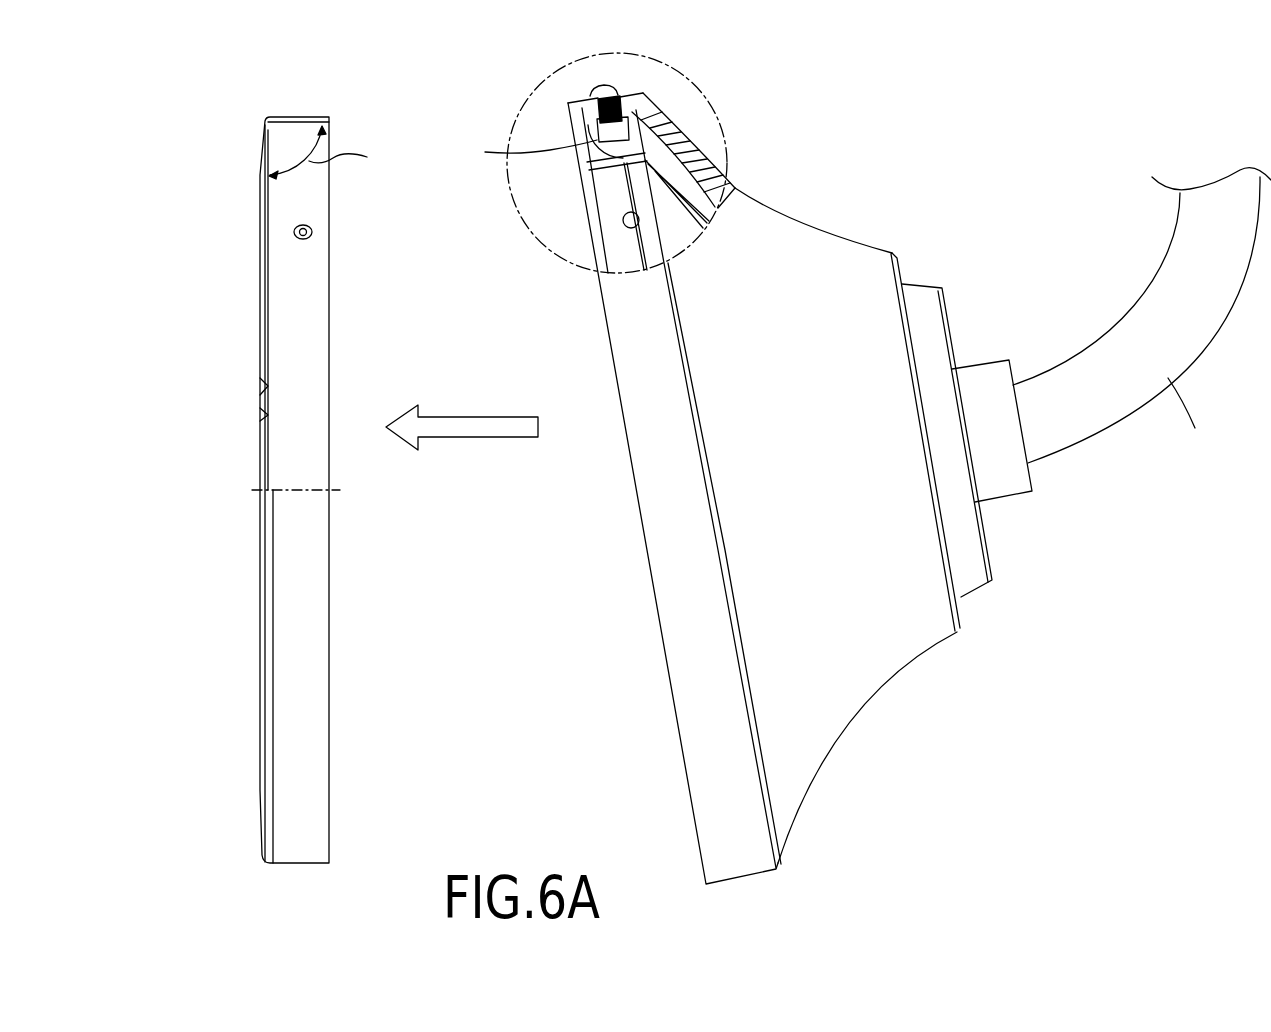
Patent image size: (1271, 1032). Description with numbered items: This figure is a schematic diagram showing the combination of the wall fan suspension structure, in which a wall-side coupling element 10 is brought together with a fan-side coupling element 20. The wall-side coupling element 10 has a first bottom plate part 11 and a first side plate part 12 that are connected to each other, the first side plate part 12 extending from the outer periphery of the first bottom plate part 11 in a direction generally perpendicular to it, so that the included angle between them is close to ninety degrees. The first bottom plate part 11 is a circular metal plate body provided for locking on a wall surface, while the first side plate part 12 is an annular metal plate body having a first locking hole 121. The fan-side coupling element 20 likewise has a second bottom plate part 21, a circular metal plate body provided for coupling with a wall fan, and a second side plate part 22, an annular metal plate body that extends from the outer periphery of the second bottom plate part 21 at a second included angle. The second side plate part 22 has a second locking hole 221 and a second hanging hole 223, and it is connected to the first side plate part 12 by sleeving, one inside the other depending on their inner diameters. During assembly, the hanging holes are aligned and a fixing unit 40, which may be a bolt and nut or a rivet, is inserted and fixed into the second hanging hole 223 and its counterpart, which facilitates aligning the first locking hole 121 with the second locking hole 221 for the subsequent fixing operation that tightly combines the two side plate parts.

The wall-side coupling element 10 is at (262, 134).
The first bottom plate part 11 is at (265, 175).
The first side plate part 12 is at (303, 117).
The first locking hole 121 is at (312, 238).
The fan-side coupling element 20 is at (857, 454).
The second bottom plate part 21 is at (827, 259).
The second side plate part 22 is at (596, 116).
The second locking hole 221 is at (625, 224).
The second hanging hole 223 is at (596, 150).
The fixing unit 40 is at (607, 86).